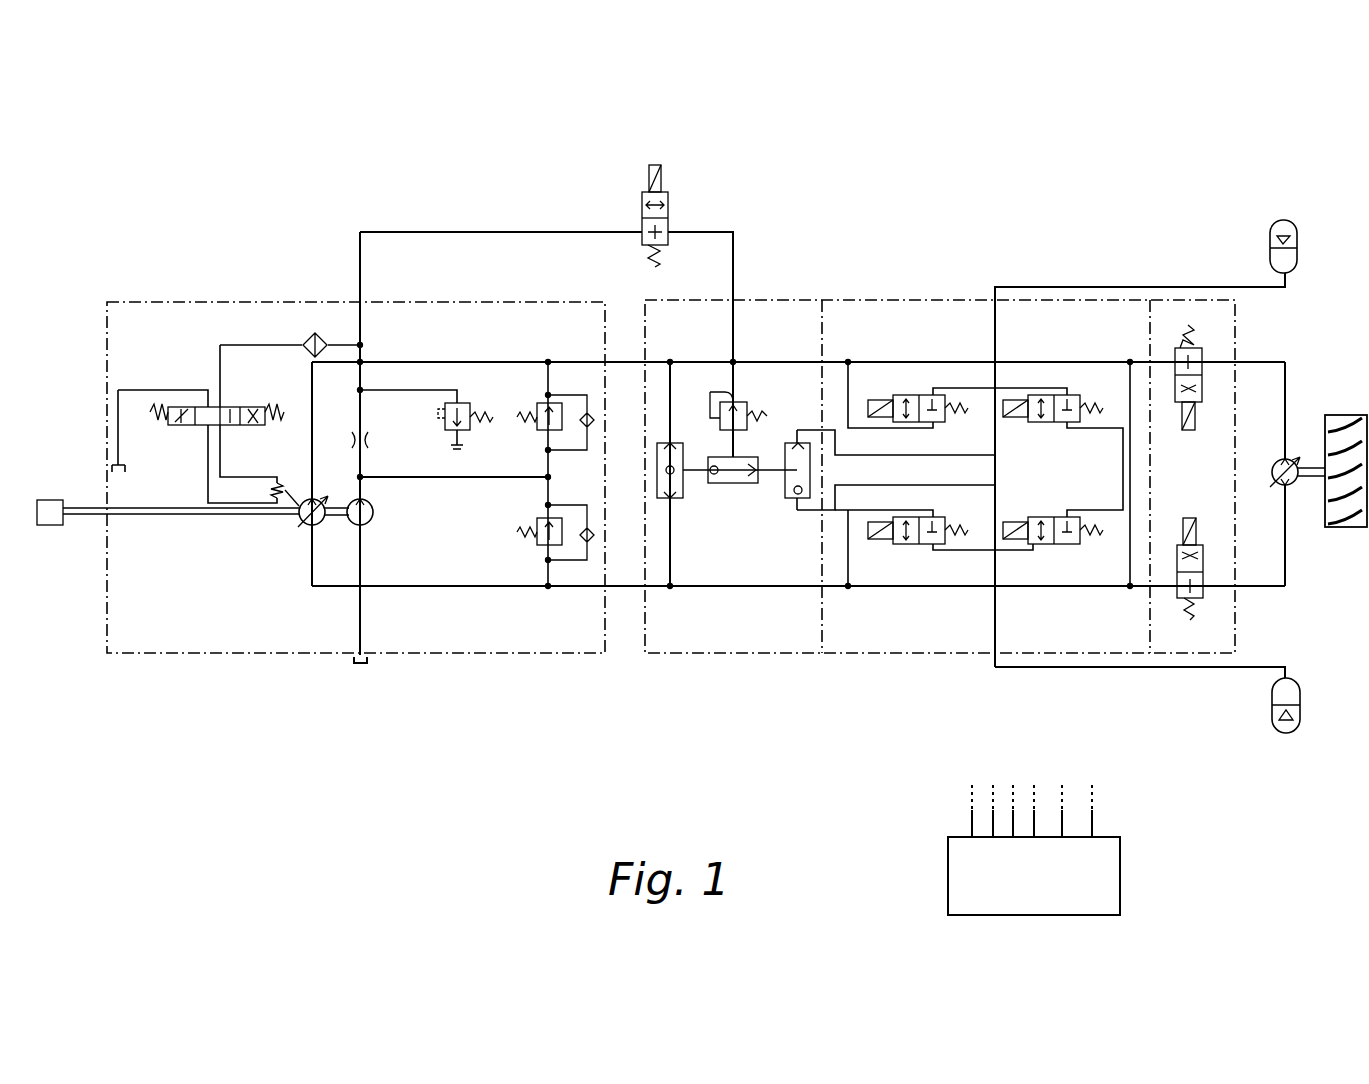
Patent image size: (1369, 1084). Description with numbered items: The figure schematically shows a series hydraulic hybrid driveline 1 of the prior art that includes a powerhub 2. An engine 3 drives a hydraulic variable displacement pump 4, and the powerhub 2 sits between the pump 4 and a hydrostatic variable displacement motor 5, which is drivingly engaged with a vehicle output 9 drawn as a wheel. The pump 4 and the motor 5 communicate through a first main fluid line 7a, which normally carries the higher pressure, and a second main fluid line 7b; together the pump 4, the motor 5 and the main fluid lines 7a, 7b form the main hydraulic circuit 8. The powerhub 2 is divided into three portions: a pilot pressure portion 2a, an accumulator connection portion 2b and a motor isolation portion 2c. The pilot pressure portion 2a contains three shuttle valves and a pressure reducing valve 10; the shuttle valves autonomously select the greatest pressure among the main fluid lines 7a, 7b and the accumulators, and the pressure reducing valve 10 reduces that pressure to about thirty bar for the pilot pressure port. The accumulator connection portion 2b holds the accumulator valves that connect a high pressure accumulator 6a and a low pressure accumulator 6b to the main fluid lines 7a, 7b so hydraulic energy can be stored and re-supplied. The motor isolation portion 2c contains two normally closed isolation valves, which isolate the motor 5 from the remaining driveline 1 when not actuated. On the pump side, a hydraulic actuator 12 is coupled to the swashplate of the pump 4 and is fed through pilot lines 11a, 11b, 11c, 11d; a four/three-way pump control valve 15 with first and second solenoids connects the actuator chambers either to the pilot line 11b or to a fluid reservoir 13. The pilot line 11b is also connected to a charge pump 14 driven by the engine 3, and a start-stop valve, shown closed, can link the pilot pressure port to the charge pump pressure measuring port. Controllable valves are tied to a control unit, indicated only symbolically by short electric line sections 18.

The hydraulic hybrid driveline 1 is at (797, 150).
The powerhub 2 is at (988, 200).
The pilot pressure portion 2a is at (648, 298).
The accumulator connection portion 2b is at (884, 655).
The motor isolation portion 2c is at (1235, 348).
The engine 3 is at (62, 530).
The hydraulic variable displacement pump 4 is at (302, 526).
The hydrostatic variable displacement motor 5 is at (1275, 464).
The high pressure accumulator 6a is at (1297, 258).
The low pressure accumulator 6b is at (1295, 738).
The first main fluid line 7a is at (420, 362).
The second main fluid line 7b is at (490, 590).
The main hydraulic circuit 8 is at (1075, 335).
The vehicle output 9 is at (1346, 418).
The pressure reducing valve 10 is at (737, 372).
The pilot line 11a is at (473, 232).
The pilot line 11b is at (262, 345).
The pilot line 11c is at (237, 481).
The pilot line 11d is at (208, 455).
The hydraulic actuator 12 is at (265, 490).
The fluid reservoir 13 is at (113, 456).
The charge pump 14 is at (376, 518).
The pump control valve 15 is at (178, 383).
The electric line sections 18 is at (1100, 806).